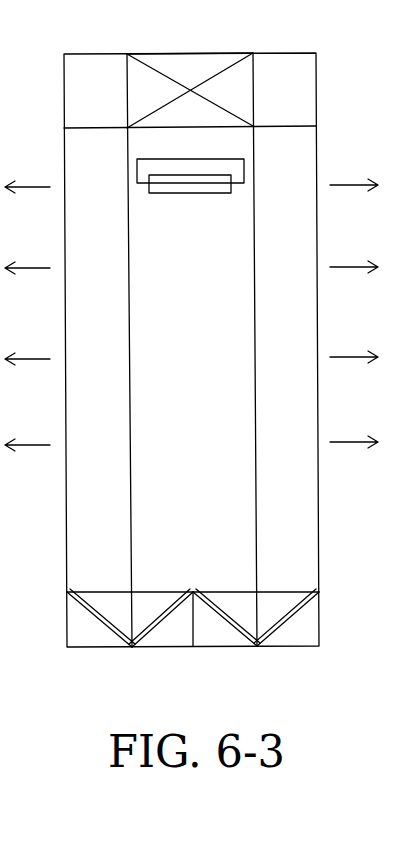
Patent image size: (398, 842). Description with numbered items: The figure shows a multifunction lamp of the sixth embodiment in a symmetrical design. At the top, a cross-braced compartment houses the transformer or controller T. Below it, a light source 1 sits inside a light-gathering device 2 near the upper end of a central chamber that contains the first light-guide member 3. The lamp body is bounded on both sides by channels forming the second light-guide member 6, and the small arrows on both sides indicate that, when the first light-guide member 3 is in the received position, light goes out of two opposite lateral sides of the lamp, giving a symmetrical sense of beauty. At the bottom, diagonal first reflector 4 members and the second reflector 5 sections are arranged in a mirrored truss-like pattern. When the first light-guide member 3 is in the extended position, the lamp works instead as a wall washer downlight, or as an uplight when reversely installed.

The transformer or controller T is at (188, 62).
The light source 1 is at (207, 190).
The light-gathering device 2 is at (223, 162).
The first light-guide member 3 is at (207, 391).
The first reflector 4 is at (165, 610).
The second reflector 5 is at (97, 625).
The second light-guide member 6 is at (75, 312).